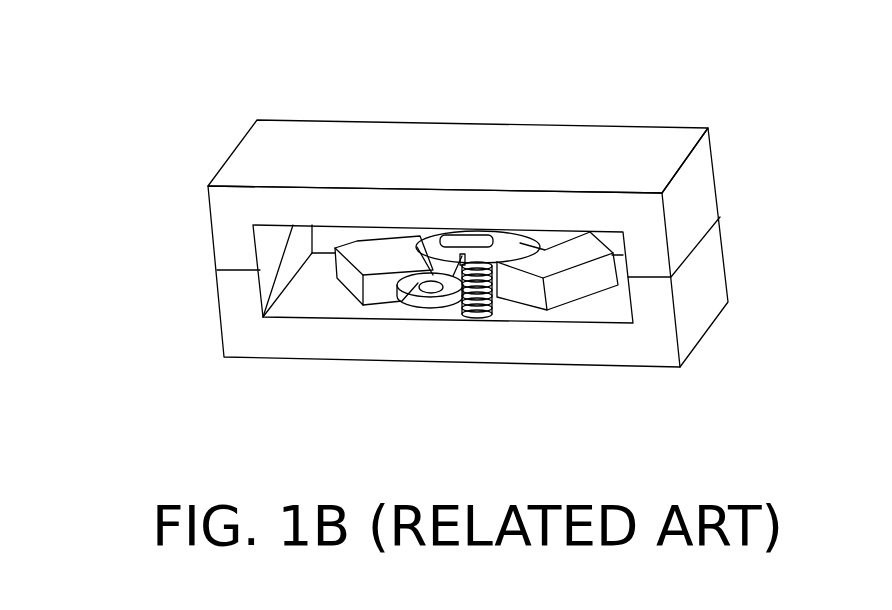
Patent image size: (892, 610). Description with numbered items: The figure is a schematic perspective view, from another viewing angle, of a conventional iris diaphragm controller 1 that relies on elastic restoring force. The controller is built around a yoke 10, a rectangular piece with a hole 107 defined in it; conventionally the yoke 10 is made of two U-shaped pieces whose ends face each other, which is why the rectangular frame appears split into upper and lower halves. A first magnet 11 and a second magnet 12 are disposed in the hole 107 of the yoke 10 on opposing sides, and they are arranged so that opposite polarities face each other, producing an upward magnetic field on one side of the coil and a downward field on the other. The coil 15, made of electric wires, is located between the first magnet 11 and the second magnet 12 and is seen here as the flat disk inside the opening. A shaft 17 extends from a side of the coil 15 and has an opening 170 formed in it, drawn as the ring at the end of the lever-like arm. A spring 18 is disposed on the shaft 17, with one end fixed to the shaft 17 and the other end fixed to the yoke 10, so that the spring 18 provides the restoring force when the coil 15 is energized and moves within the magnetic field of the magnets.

The iris diaphragm controller 1 is at (462, 57).
The yoke 10 is at (257, 170).
The hole 107 is at (310, 292).
The first magnet 11 is at (537, 247).
The second magnet 12 is at (550, 292).
The coil 15 is at (437, 243).
The shaft 17 is at (442, 300).
The opening 170 is at (427, 288).
The spring 18 is at (477, 312).